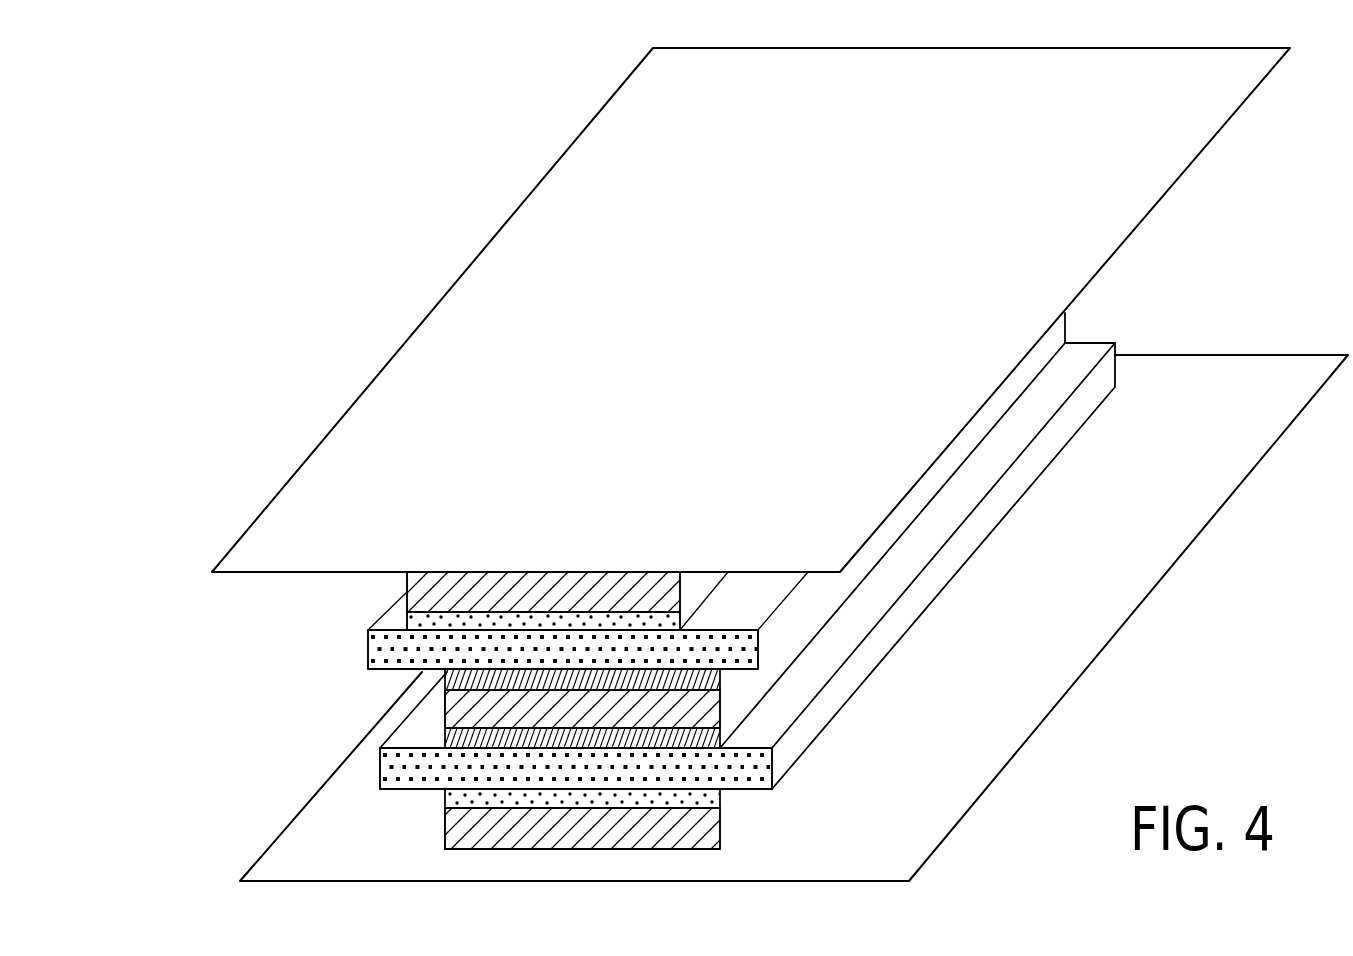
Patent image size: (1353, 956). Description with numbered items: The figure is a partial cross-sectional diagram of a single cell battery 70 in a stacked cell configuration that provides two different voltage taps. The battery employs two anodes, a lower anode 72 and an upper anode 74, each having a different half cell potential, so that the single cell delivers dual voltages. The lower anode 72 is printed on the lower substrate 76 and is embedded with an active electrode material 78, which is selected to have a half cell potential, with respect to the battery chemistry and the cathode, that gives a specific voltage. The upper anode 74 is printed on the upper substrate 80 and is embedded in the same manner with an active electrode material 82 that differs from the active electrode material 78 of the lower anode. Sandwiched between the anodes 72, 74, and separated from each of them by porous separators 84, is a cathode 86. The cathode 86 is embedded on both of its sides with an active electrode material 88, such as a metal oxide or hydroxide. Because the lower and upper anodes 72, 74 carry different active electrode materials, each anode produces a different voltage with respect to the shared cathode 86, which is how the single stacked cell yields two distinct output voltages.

The single cell battery 70 is at (321, 280).
The lower anode 72 is at (448, 832).
The upper anode 74 is at (418, 593).
The lower substrate 76 is at (272, 842).
The active electrode material 78 is at (455, 803).
The upper substrate 80 is at (420, 427).
The active electrode material 82 is at (683, 617).
The porous separators 84 is at (1087, 343).
The cathode 86 is at (720, 706).
The active electrode material 88 is at (448, 740).